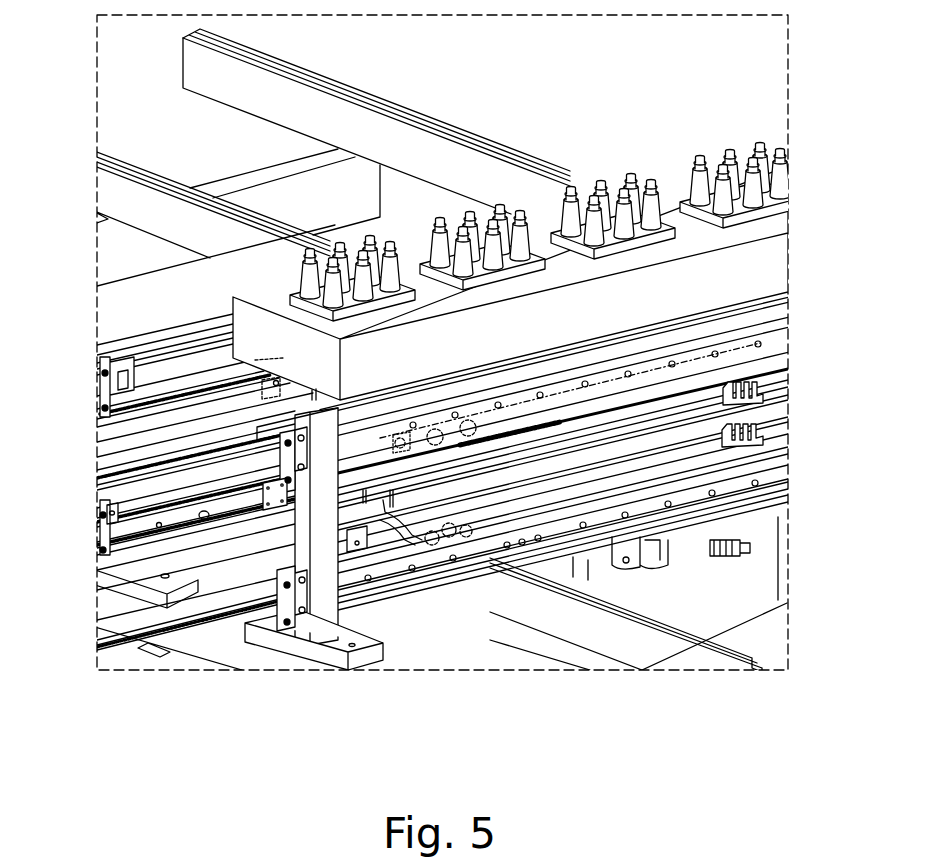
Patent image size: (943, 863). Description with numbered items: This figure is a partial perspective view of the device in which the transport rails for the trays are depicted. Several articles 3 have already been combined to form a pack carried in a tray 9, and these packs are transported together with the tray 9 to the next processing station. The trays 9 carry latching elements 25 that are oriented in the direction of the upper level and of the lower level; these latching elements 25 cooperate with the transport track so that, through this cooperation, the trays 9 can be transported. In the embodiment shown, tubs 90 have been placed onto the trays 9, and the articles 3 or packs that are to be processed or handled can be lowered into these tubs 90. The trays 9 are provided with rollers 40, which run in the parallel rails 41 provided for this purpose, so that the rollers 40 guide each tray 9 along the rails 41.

The articles 3 is at (758, 183).
The tray 9 is at (577, 405).
The latching elements 25 is at (767, 442).
The rollers 40 is at (490, 537).
The rails 41 is at (263, 465).
The tubs 90 is at (233, 370).